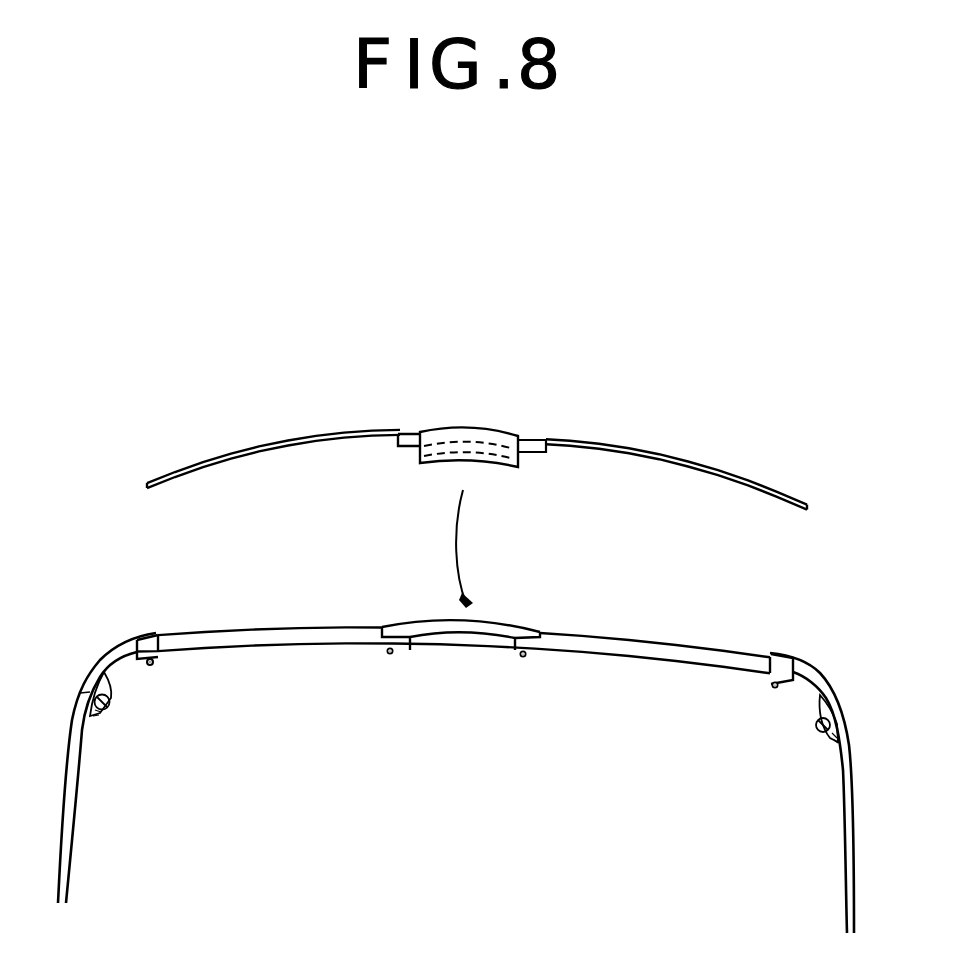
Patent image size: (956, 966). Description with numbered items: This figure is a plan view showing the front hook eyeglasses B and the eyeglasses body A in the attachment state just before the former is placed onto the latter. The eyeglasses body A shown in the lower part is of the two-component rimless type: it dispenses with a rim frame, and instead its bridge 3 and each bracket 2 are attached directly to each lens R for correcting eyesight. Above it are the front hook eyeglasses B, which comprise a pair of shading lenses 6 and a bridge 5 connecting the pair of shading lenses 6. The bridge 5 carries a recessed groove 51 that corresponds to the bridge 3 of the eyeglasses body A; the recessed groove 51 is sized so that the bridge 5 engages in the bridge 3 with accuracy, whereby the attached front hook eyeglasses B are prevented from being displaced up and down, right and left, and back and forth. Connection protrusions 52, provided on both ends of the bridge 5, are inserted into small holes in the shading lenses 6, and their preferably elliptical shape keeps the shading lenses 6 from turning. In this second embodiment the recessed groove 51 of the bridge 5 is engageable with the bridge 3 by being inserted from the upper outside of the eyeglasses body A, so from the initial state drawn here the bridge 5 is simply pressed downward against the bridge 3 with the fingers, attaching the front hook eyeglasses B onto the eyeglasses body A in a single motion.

The bracket 2 is at (106, 654).
The eyeglasses body A is at (832, 669).
The front hook eyeglasses B is at (755, 433).
The lens for correcting eyesight R is at (290, 646).
The bridge of the eyeglasses body 3 is at (446, 636).
The bridge of the front hook eyeglasses 5 is at (452, 431).
The recessed groove 51 is at (468, 447).
The connection protrusion 52 is at (541, 436).
The shading lens 6 is at (640, 443).